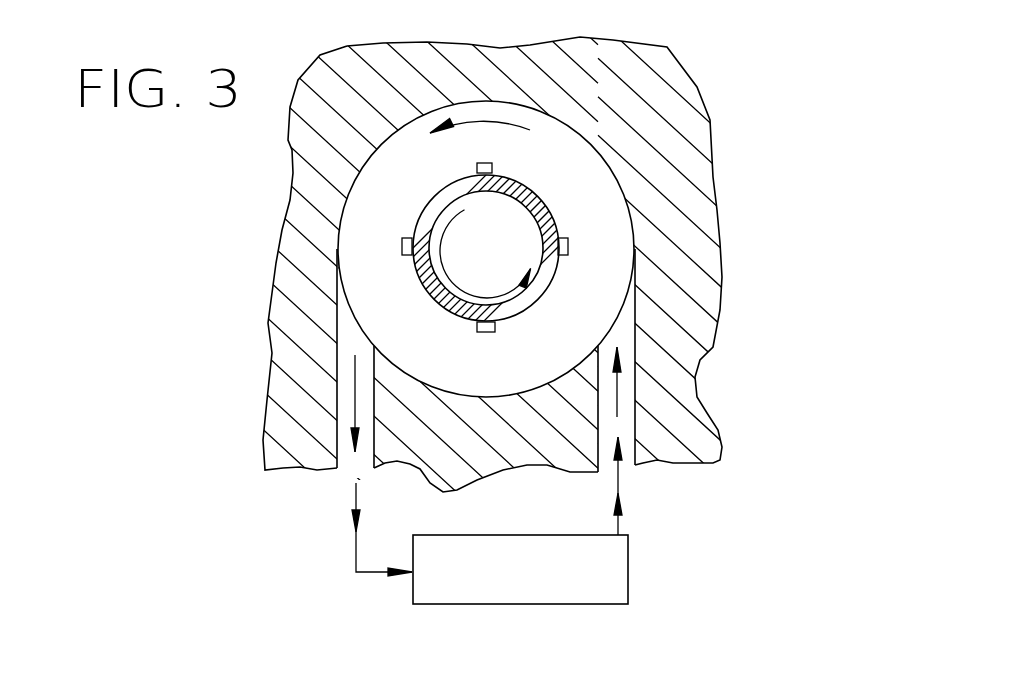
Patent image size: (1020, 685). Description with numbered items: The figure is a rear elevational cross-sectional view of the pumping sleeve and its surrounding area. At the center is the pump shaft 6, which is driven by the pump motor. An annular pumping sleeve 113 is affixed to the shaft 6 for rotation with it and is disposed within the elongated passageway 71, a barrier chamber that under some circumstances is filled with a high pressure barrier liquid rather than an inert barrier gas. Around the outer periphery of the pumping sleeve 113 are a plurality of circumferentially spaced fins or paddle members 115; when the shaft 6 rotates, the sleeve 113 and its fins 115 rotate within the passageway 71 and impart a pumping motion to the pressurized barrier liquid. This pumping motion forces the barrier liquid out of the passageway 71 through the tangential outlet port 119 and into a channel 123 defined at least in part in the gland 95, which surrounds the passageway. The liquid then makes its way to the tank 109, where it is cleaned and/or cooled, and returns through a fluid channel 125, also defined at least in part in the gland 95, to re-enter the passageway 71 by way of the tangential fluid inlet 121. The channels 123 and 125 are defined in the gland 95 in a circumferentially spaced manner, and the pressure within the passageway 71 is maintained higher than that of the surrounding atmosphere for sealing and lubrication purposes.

The gland 95 is at (628, 65).
The passageway 71 is at (620, 258).
The tangential fluid inlet 121 is at (610, 327).
The tangential outlet port 119 is at (347, 362).
The annular pumping sleeve 113 is at (523, 192).
The fins or paddle members 115 is at (492, 168).
The pump shaft 6 is at (500, 240).
The channel 123 is at (355, 490).
The fluid channel 125 is at (620, 475).
The tank 109 is at (618, 585).